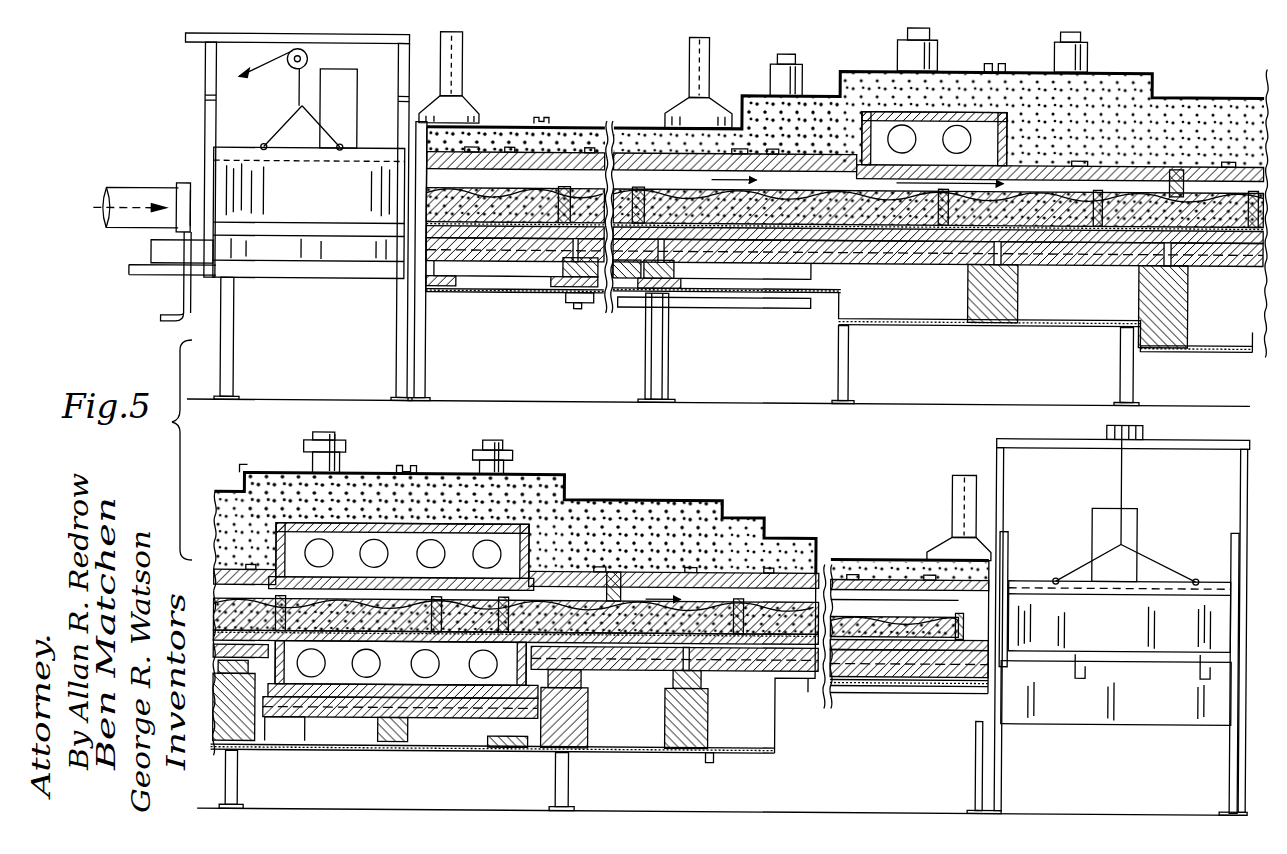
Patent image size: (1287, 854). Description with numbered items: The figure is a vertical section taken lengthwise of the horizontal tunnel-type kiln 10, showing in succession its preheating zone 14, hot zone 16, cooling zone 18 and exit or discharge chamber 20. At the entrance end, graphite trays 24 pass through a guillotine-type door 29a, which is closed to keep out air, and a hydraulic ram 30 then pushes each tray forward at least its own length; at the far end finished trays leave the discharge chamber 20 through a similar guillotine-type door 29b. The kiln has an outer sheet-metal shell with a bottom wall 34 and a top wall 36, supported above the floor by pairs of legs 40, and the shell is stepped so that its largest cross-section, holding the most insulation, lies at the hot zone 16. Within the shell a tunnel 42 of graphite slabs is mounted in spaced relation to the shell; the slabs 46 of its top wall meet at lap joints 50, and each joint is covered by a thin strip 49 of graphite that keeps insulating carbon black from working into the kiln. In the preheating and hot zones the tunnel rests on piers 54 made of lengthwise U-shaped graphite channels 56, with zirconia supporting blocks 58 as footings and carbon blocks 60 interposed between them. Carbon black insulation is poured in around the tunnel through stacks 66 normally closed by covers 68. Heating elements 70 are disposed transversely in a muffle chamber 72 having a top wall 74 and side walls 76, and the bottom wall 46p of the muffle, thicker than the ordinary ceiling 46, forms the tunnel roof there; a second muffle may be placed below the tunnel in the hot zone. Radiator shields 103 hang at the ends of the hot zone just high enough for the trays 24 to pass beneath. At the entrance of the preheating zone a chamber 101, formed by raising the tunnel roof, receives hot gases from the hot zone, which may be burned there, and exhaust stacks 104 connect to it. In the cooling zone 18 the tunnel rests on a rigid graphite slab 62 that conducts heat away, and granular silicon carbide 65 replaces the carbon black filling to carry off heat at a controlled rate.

The horizontal tunnel-type kiln 10 is at (1162, 84).
The preheating zone 14 is at (592, 92).
The hot zone 16 is at (587, 478).
The cooling zone 18 is at (754, 508).
The exit or discharge chamber 20 is at (915, 598).
The graphite trays 24 is at (739, 596).
The guillotine-type door 29a is at (327, 192).
The guillotine-type door 29b is at (1137, 630).
The hydraulic ram 30 is at (137, 184).
The bottom wall 34 is at (760, 307).
The top wall 36 is at (490, 122).
The legs 40 is at (233, 377).
The tunnel 42 is at (914, 240).
The top wall slabs 46 is at (1026, 170).
The bottom wall of the muffle 46p is at (910, 160).
The thin strip 49 is at (580, 148).
The lap joints 50 is at (1095, 162).
The piers 54 is at (586, 709).
The graphite channels 56 is at (478, 250).
The supporting blocks 58 is at (567, 290).
The carbon blocks 60 is at (562, 266).
The rigid graphite slab 62 is at (912, 670).
The granular silicon carbide 65 is at (870, 568).
The stacks 66 is at (898, 46).
The covers 68 is at (777, 52).
The heating elements 70 is at (960, 120).
The muffle chamber 72 is at (1008, 131).
The top wall 74 is at (920, 107).
The side walls 76 is at (791, 126).
The chamber 101 is at (662, 172).
The radiator shields 103 is at (1176, 162).
The exhaust stacks 104 is at (458, 63).